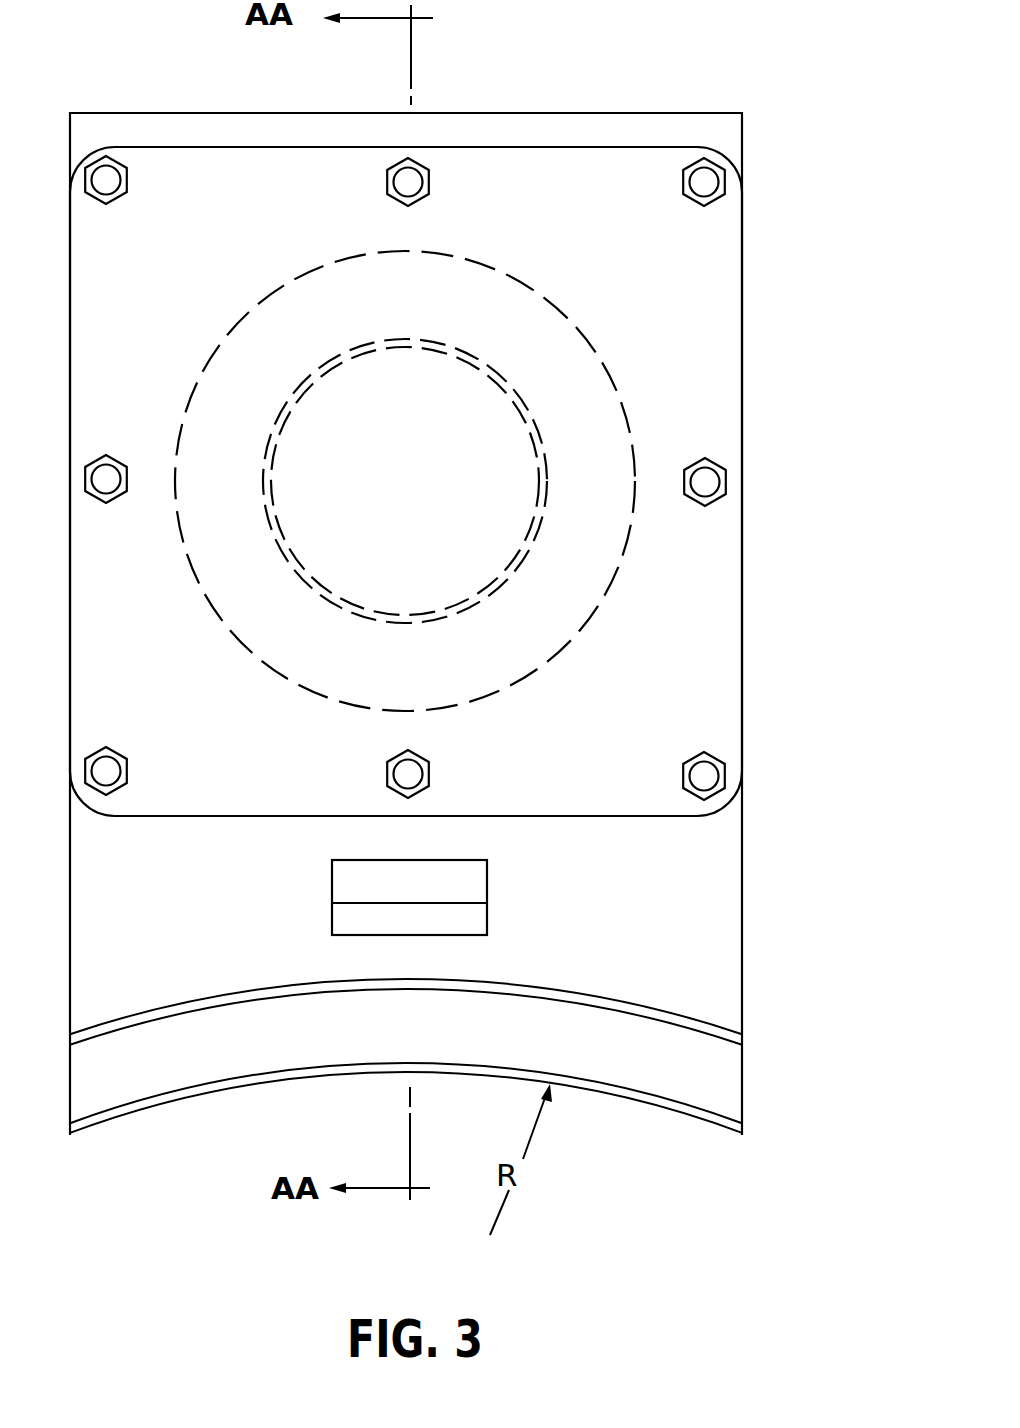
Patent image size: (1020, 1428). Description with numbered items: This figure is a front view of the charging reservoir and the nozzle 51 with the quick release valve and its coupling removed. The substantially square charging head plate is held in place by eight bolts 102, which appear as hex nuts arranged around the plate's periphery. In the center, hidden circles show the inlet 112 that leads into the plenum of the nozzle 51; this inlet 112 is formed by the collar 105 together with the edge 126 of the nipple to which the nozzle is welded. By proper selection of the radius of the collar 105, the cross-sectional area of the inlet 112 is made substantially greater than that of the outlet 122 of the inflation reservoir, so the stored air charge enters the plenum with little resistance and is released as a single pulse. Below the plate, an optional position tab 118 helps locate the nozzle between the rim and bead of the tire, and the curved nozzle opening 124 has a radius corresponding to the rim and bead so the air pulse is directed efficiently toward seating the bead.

The nozzle 51 is at (558, 134).
The bolts 102 is at (722, 185).
The collar 105 is at (545, 660).
The inlet 112 is at (560, 603).
The position tab 118 is at (487, 893).
The outlet 122 is at (465, 395).
The nozzle opening 124 is at (640, 1070).
The edge 126 is at (535, 427).